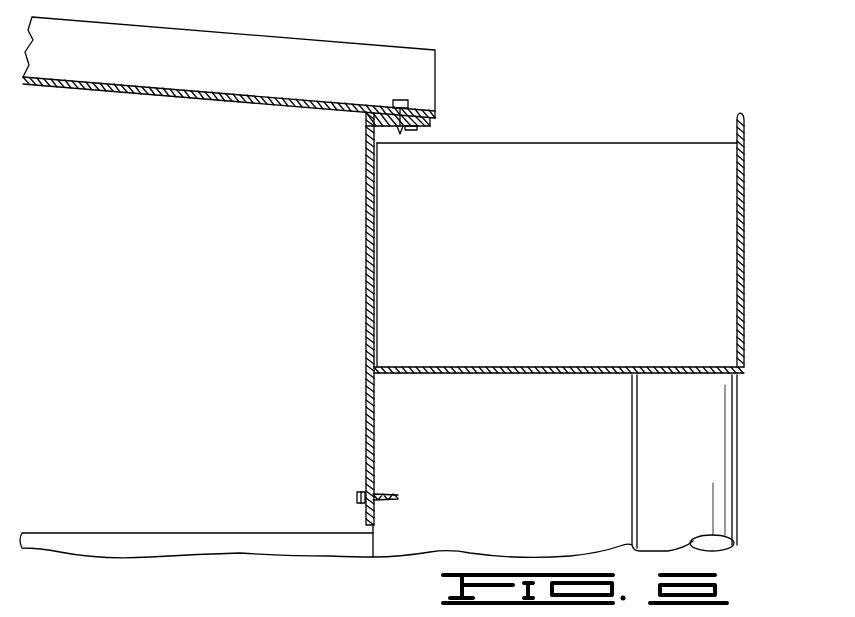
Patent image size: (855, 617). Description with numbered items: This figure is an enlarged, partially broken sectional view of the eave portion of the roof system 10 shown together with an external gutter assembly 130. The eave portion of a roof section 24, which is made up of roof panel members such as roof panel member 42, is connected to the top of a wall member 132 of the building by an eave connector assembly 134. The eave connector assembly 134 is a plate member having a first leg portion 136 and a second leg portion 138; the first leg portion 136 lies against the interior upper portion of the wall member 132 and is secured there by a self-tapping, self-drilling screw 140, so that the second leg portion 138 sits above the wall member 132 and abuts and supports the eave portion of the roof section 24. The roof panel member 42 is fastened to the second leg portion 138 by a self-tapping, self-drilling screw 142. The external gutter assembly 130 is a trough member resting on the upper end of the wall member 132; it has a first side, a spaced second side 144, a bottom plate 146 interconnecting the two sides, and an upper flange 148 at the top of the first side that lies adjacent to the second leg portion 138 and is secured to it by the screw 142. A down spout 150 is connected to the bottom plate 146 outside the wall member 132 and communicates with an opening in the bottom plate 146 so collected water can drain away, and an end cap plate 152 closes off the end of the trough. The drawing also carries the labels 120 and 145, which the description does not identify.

The roof system 10 is at (386, 33).
The roof section 24 is at (245, 30).
The roof panel member 42 is at (297, 58).
The lower panel 120 is at (255, 616).
The external gutter assembly 130 is at (750, 180).
The wall member 132 is at (525, 481).
The eave connector assembly 134 is at (360, 336).
The first leg portion 136 is at (366, 397).
The second leg portion 138 is at (428, 113).
The self-tapping, self-drilling screw 140 is at (357, 497).
The self-tapping, self-drilling screw 142 is at (403, 100).
The second side 144 is at (737, 245).
The inner liner 145 is at (375, 262).
The bottom plate 146 is at (532, 367).
The upper flange 148 is at (414, 130).
The down spout 150 is at (722, 470).
The end cap plate 152 is at (540, 143).